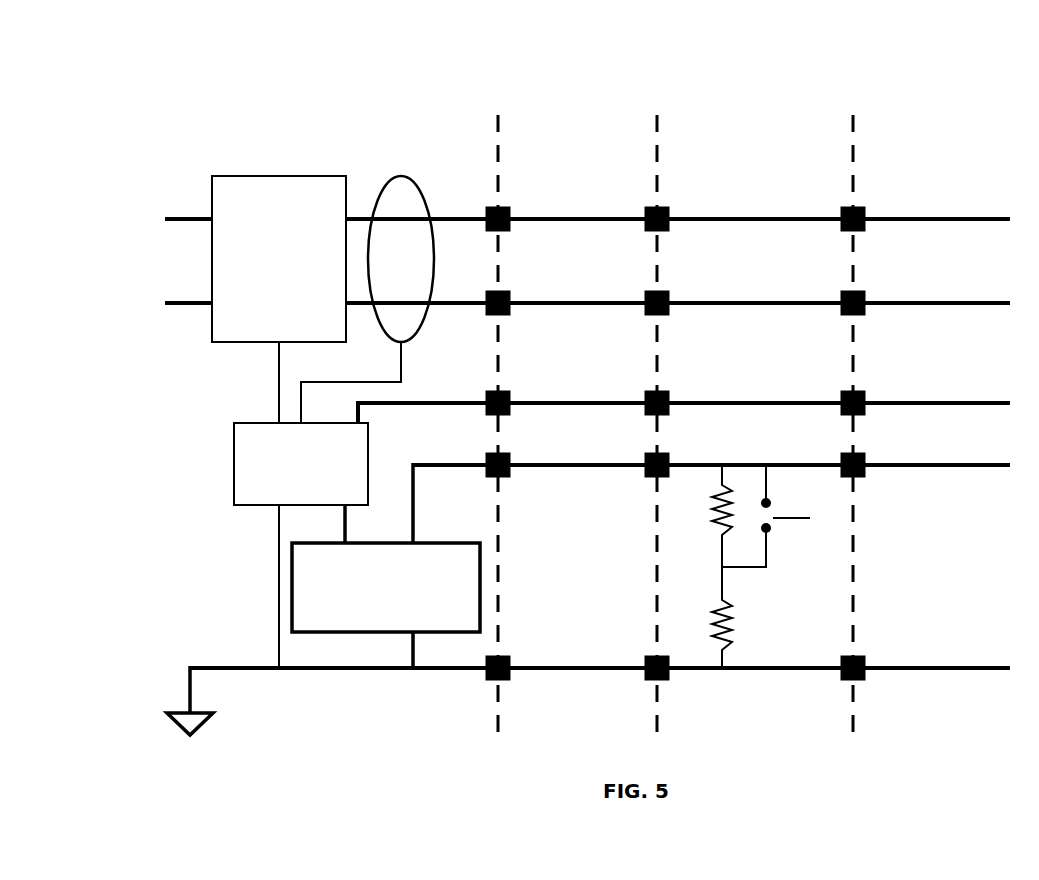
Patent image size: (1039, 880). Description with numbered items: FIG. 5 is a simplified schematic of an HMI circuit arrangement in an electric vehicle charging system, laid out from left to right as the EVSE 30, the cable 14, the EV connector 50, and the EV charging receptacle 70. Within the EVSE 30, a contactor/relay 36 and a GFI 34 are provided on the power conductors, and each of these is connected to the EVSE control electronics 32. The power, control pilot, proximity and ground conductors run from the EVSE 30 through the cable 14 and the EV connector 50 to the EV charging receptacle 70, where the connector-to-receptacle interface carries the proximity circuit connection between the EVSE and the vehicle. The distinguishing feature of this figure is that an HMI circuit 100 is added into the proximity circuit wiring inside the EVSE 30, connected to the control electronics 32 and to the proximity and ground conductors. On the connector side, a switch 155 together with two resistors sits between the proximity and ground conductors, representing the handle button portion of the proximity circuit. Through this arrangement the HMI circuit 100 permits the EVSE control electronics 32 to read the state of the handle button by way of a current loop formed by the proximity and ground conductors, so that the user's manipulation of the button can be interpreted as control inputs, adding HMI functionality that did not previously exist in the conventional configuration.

The EVSE 30 is at (332, 90).
The contactor/relay 36 is at (257, 176).
The GFI 34 is at (401, 177).
The EVSE control electronics 32 is at (233, 475).
The HMI circuit 100 is at (377, 632).
The cable 14 is at (578, 97).
The EV connector 50 is at (762, 90).
The EV charging receptacle 70 is at (932, 90).
The proximity button switch 155 is at (777, 522).